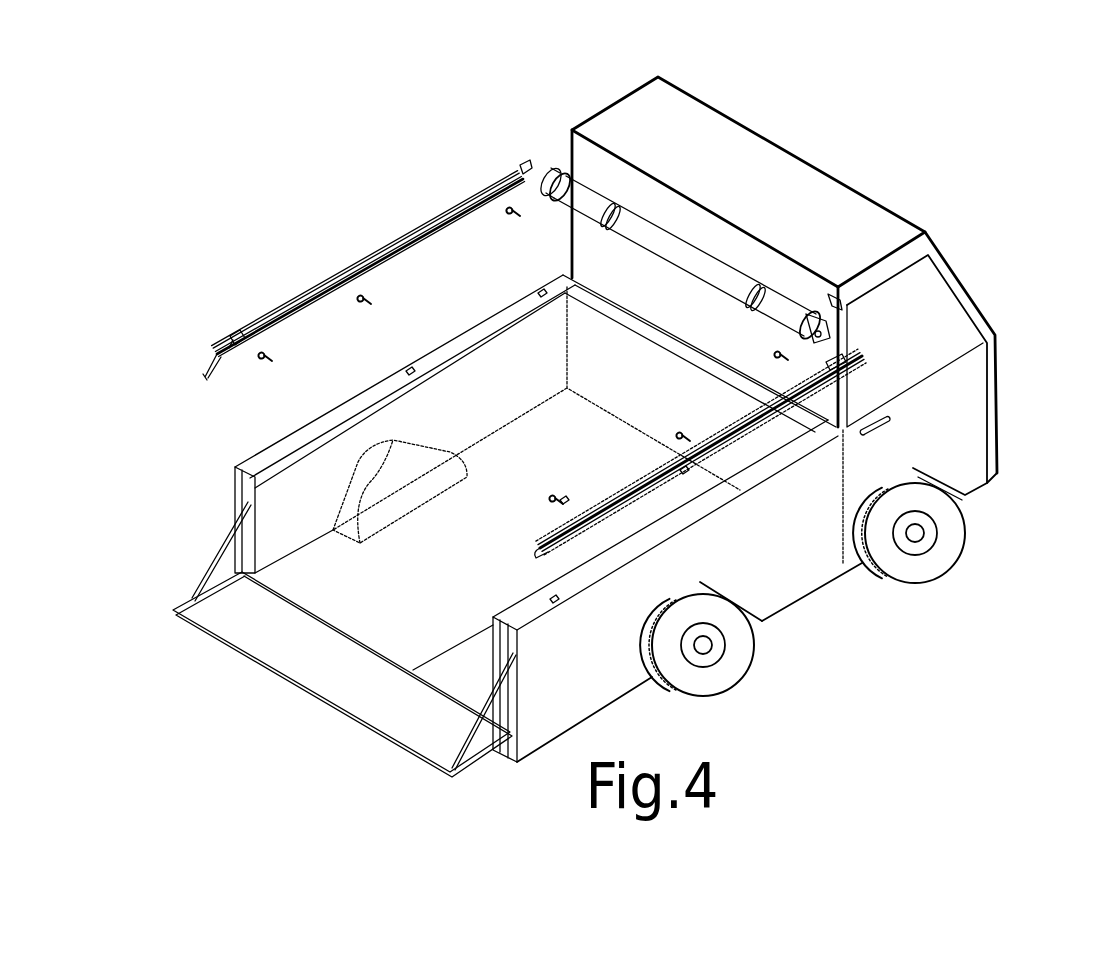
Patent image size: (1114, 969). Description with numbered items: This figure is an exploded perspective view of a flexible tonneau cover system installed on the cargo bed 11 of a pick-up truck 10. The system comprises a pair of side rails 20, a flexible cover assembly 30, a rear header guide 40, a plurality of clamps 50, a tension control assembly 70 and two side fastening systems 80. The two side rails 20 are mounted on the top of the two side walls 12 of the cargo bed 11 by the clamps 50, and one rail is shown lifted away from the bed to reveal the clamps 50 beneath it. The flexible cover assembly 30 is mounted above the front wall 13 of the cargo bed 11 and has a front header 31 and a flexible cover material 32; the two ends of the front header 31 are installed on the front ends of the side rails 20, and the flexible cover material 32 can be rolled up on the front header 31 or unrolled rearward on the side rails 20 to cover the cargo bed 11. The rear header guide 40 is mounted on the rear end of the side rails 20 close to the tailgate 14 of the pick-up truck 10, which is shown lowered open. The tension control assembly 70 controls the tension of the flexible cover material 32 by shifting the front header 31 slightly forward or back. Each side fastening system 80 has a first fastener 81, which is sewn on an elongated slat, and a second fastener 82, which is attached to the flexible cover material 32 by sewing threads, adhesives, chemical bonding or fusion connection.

The pick-up truck 10 is at (862, 583).
The cargo bed 11 is at (399, 596).
The side walls 12 is at (449, 418).
The front wall 13 is at (621, 396).
The tailgate 14 is at (307, 673).
The side rails 20 is at (730, 440).
The flexible cover assembly 30 is at (724, 361).
The front header 31 is at (817, 337).
The flexible cover material 32 is at (718, 272).
The rear header guide 40 is at (241, 337).
The clamps 50 is at (515, 219).
The tension control assembly 70 is at (521, 163).
The side fastening systems 80 is at (969, 318).
The first fastener 81 is at (834, 366).
The second fastener 82 is at (836, 296).